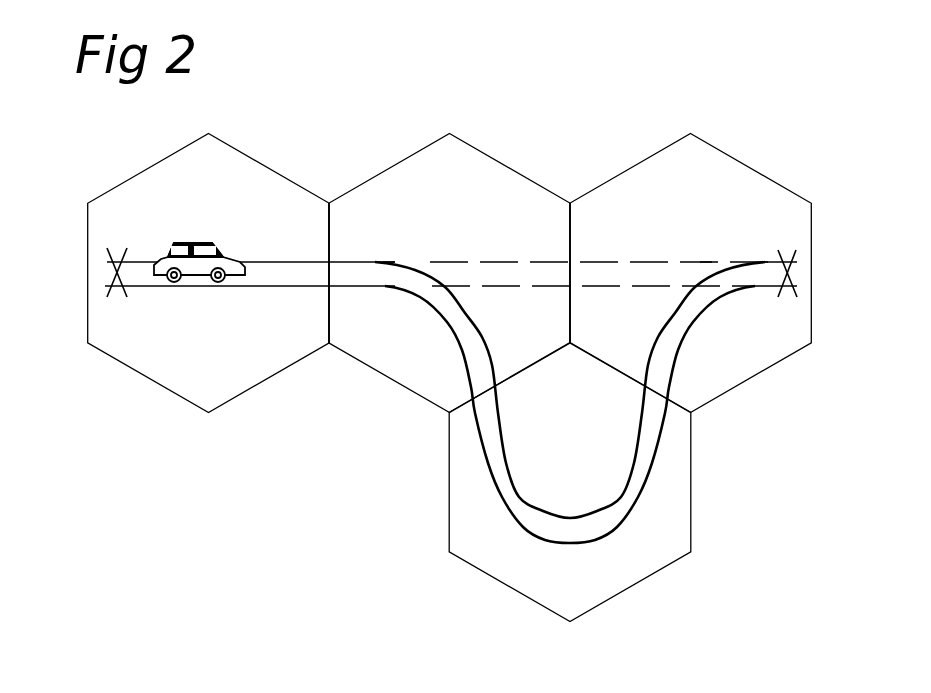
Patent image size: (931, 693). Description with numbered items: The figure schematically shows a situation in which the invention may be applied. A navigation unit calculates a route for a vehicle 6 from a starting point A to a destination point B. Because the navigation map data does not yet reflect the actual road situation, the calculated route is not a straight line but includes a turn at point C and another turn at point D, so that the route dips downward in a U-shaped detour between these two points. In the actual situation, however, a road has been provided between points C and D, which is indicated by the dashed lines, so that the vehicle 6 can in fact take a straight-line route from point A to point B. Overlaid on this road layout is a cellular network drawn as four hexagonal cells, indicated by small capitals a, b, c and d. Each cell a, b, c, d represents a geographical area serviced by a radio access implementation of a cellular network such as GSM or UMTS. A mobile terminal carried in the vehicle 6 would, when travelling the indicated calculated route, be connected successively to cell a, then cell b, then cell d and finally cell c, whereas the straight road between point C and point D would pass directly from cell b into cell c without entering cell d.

The vehicle 6 is at (199, 244).
The cell a is at (181, 385).
The cell b is at (436, 152).
The cell c is at (671, 163).
The cell d is at (678, 503).
The point A is at (116, 263).
The point B is at (787, 259).
The point C is at (388, 248).
The point D is at (704, 248).